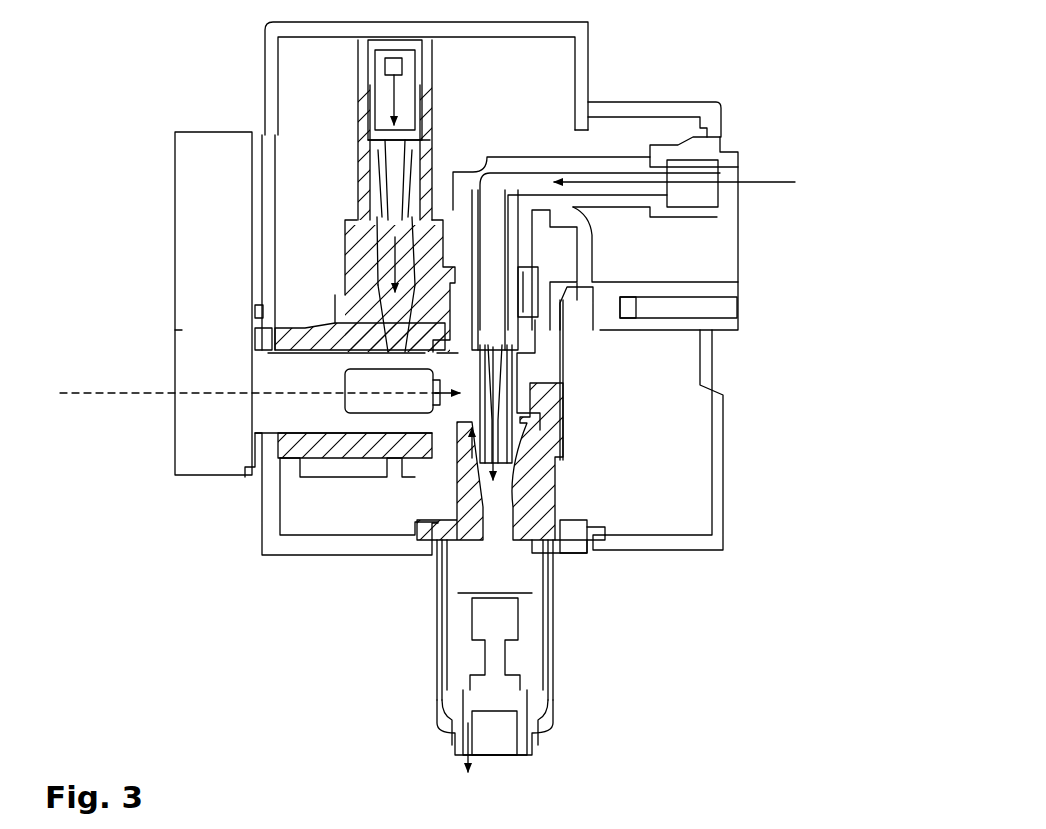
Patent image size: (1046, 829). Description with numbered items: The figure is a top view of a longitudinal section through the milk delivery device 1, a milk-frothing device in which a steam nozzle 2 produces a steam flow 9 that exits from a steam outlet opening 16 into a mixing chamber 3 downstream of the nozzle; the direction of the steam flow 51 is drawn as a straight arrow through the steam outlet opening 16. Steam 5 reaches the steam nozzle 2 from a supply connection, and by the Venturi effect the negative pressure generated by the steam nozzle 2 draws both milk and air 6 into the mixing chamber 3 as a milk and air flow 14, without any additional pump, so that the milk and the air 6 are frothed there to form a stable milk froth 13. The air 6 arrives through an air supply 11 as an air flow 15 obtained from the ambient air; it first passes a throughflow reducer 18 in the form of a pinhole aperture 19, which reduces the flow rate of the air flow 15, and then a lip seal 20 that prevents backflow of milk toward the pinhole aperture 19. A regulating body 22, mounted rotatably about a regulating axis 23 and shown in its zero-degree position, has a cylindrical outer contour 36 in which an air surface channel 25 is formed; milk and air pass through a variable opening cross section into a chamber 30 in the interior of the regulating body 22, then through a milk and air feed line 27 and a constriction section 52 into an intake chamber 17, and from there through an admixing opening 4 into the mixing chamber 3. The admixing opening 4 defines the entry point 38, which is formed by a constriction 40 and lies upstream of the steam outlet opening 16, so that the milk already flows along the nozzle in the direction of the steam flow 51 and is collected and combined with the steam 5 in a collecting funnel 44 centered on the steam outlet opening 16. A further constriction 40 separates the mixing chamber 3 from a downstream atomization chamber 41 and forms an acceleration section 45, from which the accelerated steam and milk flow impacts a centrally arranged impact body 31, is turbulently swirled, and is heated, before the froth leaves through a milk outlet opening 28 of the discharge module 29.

The milk delivery device 1 is at (665, 86).
The steam nozzle 2 is at (560, 430).
The mixing chamber 3 is at (590, 525).
The admixing opening 4 is at (508, 435).
The steam 5 is at (493, 247).
The air 6 is at (385, 328).
The steam flow 9 is at (773, 182).
The air supply 11 is at (385, 300).
The milk froth 13 is at (460, 756).
The milk and air flow 14 is at (460, 445).
The air flow 15 is at (385, 92).
The steam outlet opening 16 is at (530, 547).
The intake chamber 17 is at (510, 395).
The throughflow reducer 18 is at (433, 141).
The pinhole aperture 19 is at (385, 138).
The lip seal 20 is at (385, 187).
The regulating body 22 is at (280, 410).
The regulating axis 23 is at (108, 392).
The air surface channel 25 is at (333, 353).
The milk and air feed line 27 is at (300, 370).
The milk outlet opening 28 is at (527, 752).
The discharge module 29 is at (550, 720).
The chamber 30 is at (373, 400).
The impact body 31 is at (462, 752).
The outer contour 36 is at (362, 430).
The entry point 38 is at (462, 480).
The constriction 40 is at (462, 658).
The atomization chamber 41 is at (500, 697).
The collecting funnel 44 is at (460, 570).
The acceleration section 45 is at (500, 628).
The direction of the steam flow 51 is at (503, 380).
The constriction section 52 is at (480, 407).